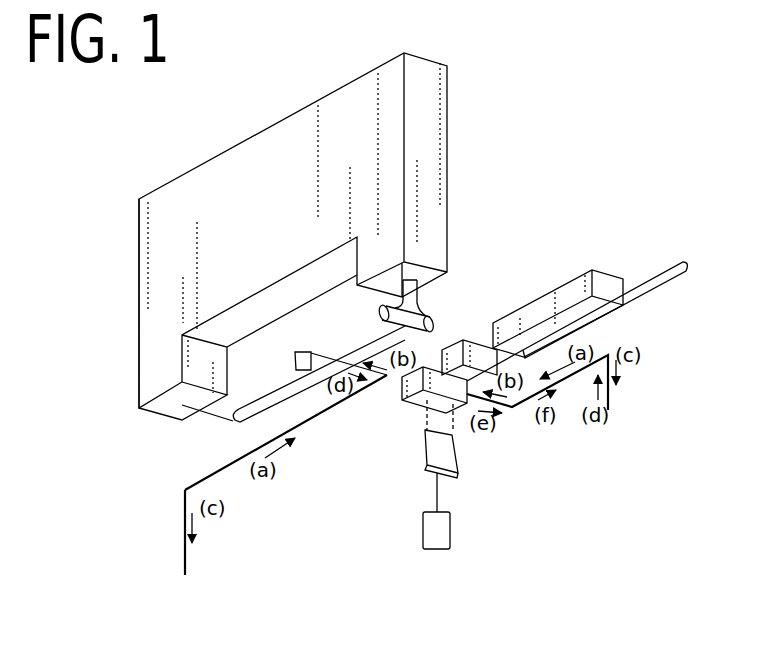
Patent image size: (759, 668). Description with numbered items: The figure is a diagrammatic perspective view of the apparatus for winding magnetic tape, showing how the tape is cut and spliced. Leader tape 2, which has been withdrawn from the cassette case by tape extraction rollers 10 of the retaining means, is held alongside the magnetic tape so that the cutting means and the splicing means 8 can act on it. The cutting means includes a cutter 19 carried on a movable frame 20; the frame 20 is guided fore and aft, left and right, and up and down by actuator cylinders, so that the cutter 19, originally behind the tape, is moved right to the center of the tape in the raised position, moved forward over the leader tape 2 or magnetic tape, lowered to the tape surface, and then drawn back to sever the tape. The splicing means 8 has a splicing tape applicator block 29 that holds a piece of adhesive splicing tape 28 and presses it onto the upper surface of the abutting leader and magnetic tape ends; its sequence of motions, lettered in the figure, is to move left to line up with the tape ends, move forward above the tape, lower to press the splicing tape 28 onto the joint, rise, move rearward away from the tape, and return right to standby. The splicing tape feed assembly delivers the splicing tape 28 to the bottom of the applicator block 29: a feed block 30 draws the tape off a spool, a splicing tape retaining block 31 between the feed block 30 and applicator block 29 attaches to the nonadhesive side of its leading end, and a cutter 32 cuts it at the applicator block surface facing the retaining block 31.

The leader tape 2 is at (370, 343).
The splicing means 8 is at (488, 298).
The tape extraction roller 10 is at (427, 308).
The cutter 19 is at (293, 360).
The movable frame 20 is at (322, 412).
The adhesive splicing tape 28 is at (648, 282).
The splicing tape applicator block 29 is at (402, 402).
The feed block 30 is at (560, 288).
The splicing tape retaining block 31 is at (453, 340).
The cutter 32 is at (456, 465).